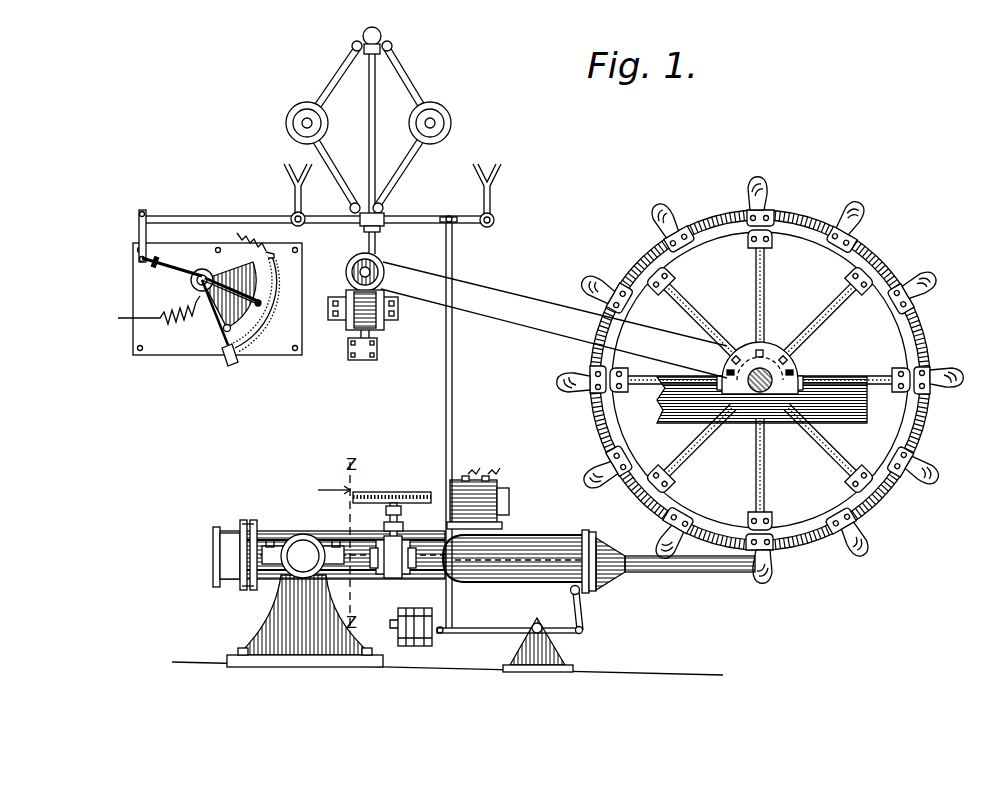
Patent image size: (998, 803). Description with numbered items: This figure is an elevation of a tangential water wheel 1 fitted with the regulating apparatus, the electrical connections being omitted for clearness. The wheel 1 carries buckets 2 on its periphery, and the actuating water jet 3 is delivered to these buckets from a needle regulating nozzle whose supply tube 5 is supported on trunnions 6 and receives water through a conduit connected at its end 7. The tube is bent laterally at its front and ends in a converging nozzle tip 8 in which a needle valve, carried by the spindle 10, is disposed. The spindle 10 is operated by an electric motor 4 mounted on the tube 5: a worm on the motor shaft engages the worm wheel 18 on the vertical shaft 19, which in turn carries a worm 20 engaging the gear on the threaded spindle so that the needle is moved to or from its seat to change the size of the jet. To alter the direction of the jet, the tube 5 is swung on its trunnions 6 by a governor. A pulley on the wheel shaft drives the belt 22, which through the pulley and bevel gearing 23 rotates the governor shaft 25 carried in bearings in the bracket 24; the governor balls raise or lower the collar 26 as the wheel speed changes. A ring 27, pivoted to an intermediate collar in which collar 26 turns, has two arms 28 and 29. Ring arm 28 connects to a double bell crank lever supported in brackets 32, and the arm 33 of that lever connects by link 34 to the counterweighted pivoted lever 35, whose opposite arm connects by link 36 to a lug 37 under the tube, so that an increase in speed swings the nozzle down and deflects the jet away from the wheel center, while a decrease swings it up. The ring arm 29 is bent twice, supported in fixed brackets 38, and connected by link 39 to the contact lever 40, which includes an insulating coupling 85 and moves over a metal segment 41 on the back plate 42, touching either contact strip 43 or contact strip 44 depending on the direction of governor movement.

The tangential water wheel 1 is at (793, 232).
The buckets 2 is at (868, 220).
The water jet 3 is at (690, 579).
The electric motor 4 is at (510, 511).
The supply tube 5 is at (299, 534).
The trunnions 6 is at (282, 572).
The end of the supply tube 7 is at (224, 555).
The nozzle tip 8 is at (606, 580).
The spindle 10 is at (411, 615).
The worm wheel 18 is at (374, 492).
The vertical shaft 19 is at (400, 518).
The worm 20 is at (385, 578).
The belt 22 is at (554, 320).
The pulley and bevel gearing 23 is at (382, 274).
The bracket 24 is at (380, 326).
The governor shaft 25 is at (376, 241).
The collar 26 is at (386, 208).
The ring 27 is at (360, 224).
The ring arm 28 is at (431, 226).
The ring arm 29 is at (314, 207).
The brackets 32 is at (492, 200).
The arm 33 is at (482, 228).
The link 34 is at (453, 373).
The counterweighted pivoted lever 35 is at (507, 616).
The link 36 is at (582, 627).
The lug 37 is at (569, 591).
The fixed brackets 38 is at (296, 194).
The link 39 is at (139, 227).
The contact lever 40 is at (152, 263).
The metal segment 41 is at (208, 318).
The back plate 42 is at (140, 355).
The contact strip 43 is at (276, 284).
The contact strip 44 is at (240, 350).
The insulating coupling 85 is at (158, 268).